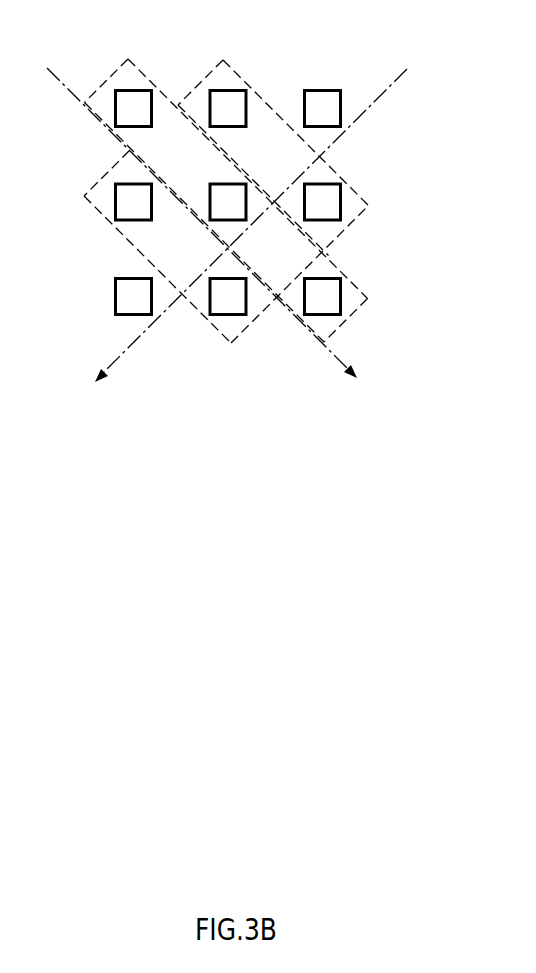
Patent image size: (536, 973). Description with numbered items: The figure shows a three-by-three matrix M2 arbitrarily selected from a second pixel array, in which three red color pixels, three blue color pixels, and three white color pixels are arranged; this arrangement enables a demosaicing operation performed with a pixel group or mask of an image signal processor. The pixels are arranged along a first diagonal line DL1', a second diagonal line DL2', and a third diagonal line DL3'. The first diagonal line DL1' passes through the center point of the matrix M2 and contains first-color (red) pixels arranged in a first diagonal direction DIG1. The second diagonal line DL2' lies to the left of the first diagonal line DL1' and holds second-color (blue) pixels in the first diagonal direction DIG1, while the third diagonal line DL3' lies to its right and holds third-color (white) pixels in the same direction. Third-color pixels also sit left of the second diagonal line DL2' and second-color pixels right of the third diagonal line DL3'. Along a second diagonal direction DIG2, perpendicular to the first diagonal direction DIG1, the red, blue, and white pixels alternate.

The (3×3) matrix M2 is at (370, 21).
The first diagonal line DL1' is at (286, 200).
The second diagonal line DL2' is at (226, 292).
The third diagonal line DL3' is at (310, 133).
The first diagonal direction DIG1 is at (217, 239).
The second diagonal direction DIG2 is at (235, 240).